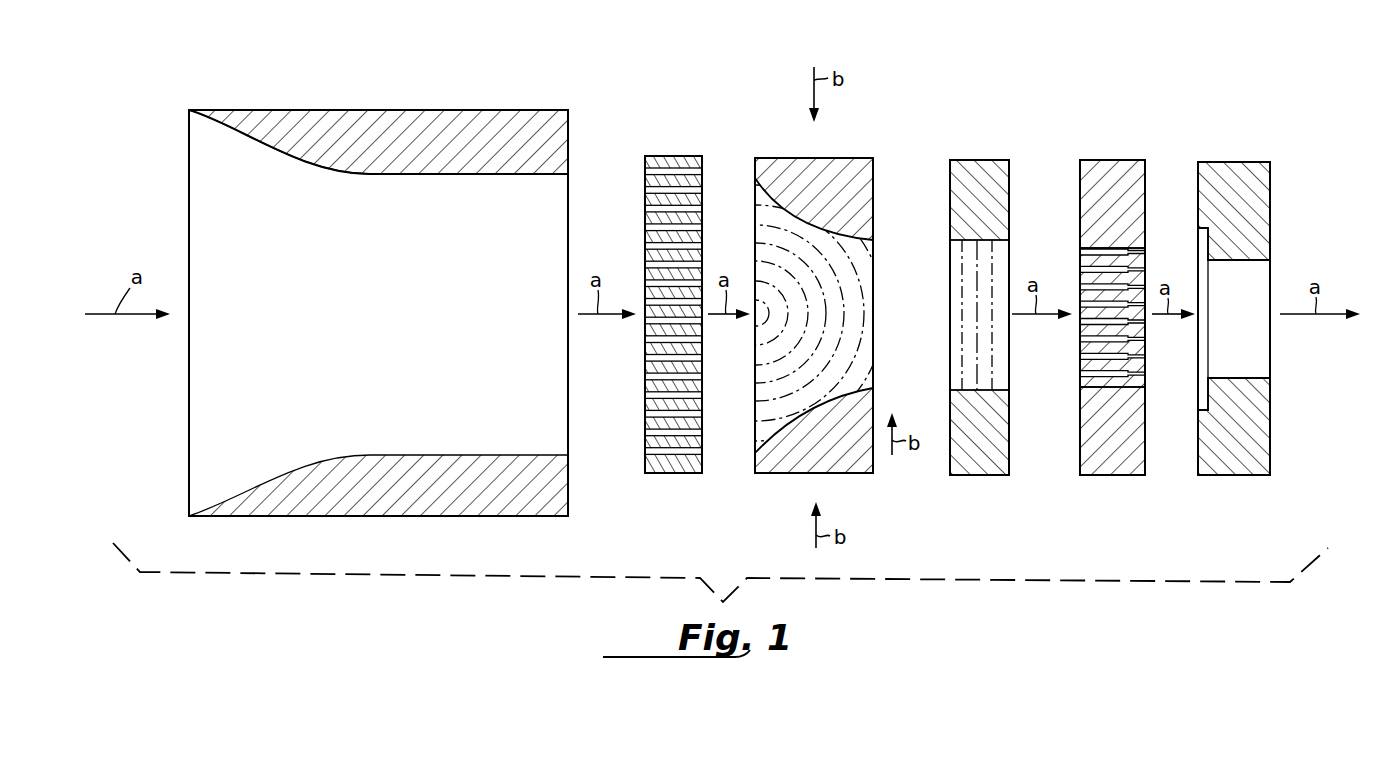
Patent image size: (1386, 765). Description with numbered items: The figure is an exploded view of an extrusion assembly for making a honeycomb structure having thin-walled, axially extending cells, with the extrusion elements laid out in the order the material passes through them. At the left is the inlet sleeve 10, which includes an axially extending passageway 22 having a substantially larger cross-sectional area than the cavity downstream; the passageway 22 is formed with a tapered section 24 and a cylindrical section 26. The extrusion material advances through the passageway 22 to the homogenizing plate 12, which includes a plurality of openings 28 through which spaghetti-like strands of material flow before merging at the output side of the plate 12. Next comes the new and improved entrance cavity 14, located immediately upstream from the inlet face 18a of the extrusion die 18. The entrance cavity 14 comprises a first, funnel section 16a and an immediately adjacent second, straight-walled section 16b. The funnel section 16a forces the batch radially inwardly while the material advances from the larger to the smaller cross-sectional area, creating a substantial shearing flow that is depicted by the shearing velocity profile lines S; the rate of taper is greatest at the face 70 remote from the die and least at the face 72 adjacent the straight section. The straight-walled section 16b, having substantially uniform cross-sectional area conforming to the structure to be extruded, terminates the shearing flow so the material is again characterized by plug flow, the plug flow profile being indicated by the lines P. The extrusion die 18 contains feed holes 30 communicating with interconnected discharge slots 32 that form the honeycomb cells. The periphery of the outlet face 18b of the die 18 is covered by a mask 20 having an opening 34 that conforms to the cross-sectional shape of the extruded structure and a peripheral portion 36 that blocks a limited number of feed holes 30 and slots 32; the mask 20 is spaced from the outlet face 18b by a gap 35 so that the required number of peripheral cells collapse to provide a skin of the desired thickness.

The inlet sleeve 10 is at (378, 110).
The homogenizing plate 12 is at (645, 279).
The entrance cavity 14 is at (777, 288).
The funnel section 16a is at (827, 227).
The straight-walled section 16b is at (961, 283).
The extrusion die 18 is at (1108, 278).
The inlet face 18a is at (1080, 190).
The outlet face 18b is at (1145, 190).
The mask 20 is at (1247, 279).
The passageway 22 is at (262, 393).
The tapered section 24 is at (270, 150).
The cylindrical section 26 is at (458, 175).
The openings 28 is at (650, 222).
The feed holes 30 is at (1108, 343).
The discharge slots 32 is at (1145, 372).
The opening 34 is at (1242, 292).
The gap 35 is at (1200, 247).
The peripheral portion 36 is at (1230, 393).
The face of the funnel section 70 is at (755, 193).
The face adjacent the straight section 72 is at (873, 240).
The velocity profile lines S is at (830, 282).
The pressure lines P is at (977, 368).